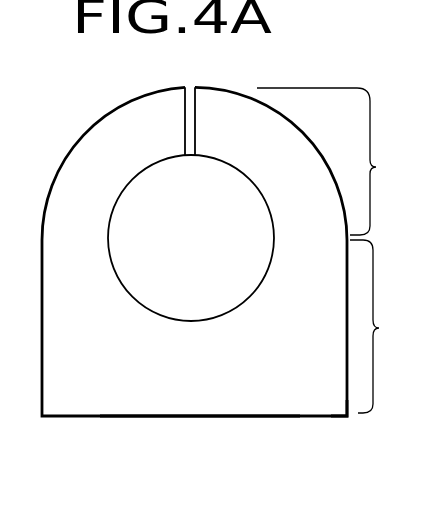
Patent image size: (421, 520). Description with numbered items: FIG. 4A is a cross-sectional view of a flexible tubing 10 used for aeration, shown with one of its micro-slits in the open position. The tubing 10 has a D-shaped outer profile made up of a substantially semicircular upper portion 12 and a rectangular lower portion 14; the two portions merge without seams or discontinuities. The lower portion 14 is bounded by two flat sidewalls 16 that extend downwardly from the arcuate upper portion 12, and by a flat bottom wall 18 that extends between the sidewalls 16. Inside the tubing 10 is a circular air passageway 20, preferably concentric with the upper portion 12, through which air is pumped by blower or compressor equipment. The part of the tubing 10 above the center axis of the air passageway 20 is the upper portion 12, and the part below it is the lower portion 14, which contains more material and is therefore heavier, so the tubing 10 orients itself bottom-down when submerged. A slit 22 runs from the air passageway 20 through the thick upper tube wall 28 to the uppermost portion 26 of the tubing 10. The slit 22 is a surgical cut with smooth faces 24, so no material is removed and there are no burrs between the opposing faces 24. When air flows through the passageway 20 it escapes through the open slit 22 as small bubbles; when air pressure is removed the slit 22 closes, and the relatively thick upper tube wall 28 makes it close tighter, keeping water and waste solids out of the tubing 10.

The flexible tubing 10 is at (192, 430).
The upper portion 12 is at (332, 161).
The lower portion 14 is at (382, 326).
The sidewall 16 is at (348, 413).
The bottom wall 18 is at (238, 417).
The air passageway 20 is at (237, 267).
The micro-slit 22 is at (190, 155).
The smooth faces 24 is at (185, 122).
The uppermost portion 26 is at (181, 86).
The upper tube wall 28 is at (68, 168).